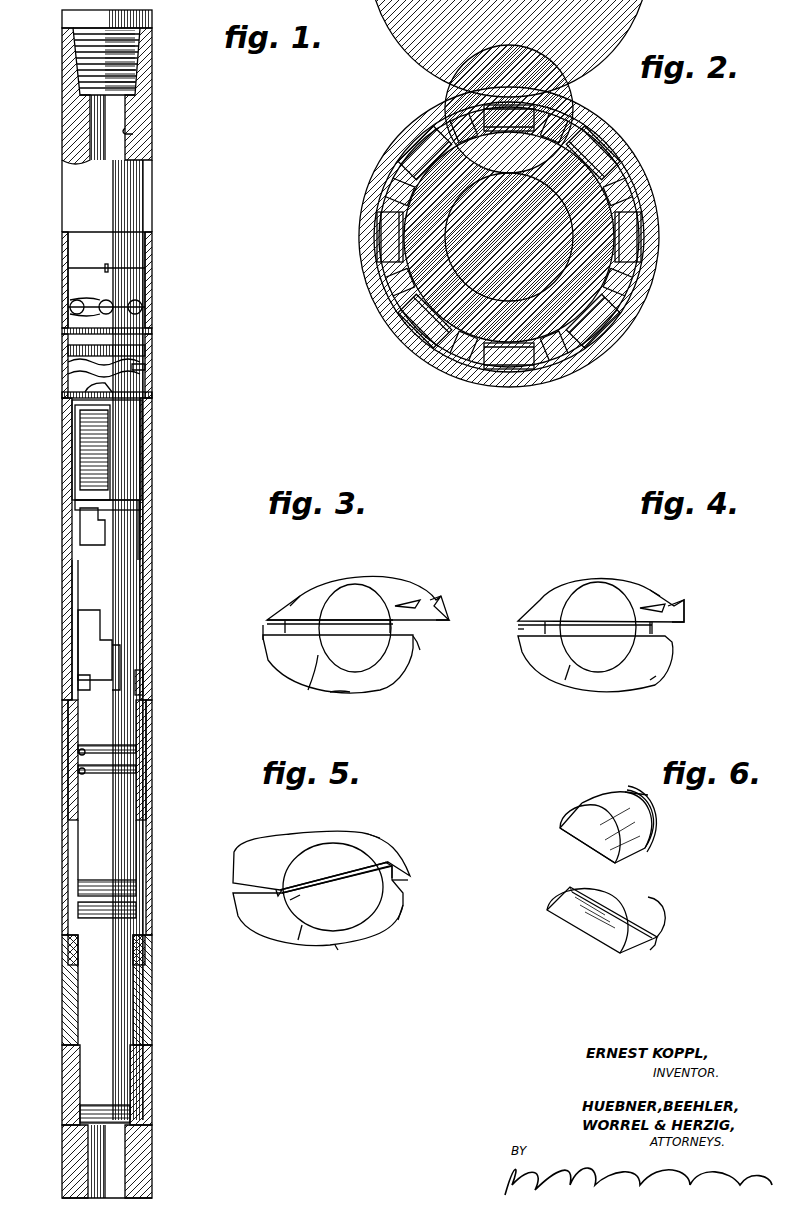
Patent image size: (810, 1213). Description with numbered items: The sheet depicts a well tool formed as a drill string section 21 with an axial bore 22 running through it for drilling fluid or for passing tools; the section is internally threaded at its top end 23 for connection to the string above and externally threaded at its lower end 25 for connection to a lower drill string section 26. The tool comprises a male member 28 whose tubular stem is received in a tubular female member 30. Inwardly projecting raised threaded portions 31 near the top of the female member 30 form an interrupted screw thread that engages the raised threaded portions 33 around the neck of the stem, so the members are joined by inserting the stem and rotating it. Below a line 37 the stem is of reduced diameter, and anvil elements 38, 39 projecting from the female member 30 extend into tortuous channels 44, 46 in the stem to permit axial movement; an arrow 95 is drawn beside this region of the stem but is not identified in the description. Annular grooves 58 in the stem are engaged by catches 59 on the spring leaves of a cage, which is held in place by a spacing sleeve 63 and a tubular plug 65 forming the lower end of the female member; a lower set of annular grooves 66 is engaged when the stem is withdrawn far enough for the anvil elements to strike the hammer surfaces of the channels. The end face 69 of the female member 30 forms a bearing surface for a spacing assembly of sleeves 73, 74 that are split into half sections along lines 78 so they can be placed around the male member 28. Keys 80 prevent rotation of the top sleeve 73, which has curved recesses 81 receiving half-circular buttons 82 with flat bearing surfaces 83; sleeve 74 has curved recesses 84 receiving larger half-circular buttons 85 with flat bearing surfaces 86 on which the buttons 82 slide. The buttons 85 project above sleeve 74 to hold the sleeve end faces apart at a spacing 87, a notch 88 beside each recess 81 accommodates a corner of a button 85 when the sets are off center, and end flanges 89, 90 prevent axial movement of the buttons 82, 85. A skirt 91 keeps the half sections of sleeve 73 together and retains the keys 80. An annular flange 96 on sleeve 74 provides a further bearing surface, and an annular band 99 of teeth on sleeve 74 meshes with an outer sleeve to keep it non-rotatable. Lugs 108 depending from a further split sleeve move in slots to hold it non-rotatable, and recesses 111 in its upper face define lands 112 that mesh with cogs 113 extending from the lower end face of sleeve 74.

In FIG. 1, the drill string section 21 is at (62, 136).
In FIG. 1, the axial bore 22 is at (133, 132).
In FIG. 2, the axial bore 22 is at (464, 270).
In FIG. 1, the top end 23 is at (143, 38).
In FIG. 1, the lower end 25 is at (152, 1121).
In FIG. 1, the drill string section 26 is at (152, 1168).
In FIG. 1, the male member 28 is at (150, 233).
In FIG. 2, the male member 28 is at (532, 302).
In FIG. 1, the tubular female member 30 is at (152, 482).
In FIG. 1, the raised threaded portions 31 is at (128, 463).
In FIG. 1, the raised threaded portions 33 is at (88, 470).
In FIG. 1, the line 37 is at (90, 691).
In FIG. 1, the anvil element 38 is at (150, 527).
In FIG. 1, the anvil element 39 is at (126, 442).
In FIG. 1, the tortuous channel 44 is at (122, 587).
In FIG. 1, the tortuous channel 46 is at (128, 658).
In FIG. 1, the annular grooves 58 is at (138, 770).
In FIG. 1, the catches 59 is at (78, 758).
In FIG. 1, the spacing sleeve 63 is at (78, 858).
In FIG. 1, the tubular plug 65 is at (146, 1063).
In FIG. 1, the annular grooves 66 is at (84, 908).
In FIG. 1, the end face 69 is at (74, 945).
In FIG. 3, the top sleeve 73 is at (300, 596).
In FIG. 4, the top sleeve 73 is at (656, 598).
In FIG. 5, the top sleeve 73 is at (372, 836).
In FIG. 2, the sleeve 74 is at (380, 292).
In FIG. 3, the sleeve 74 is at (342, 692).
In FIG. 4, the sleeve 74 is at (652, 672).
In FIG. 5, the sleeve 74 is at (340, 944).
In FIG. 2, the split lines 78 is at (400, 195).
In FIG. 1, the keys 80 is at (66, 268).
In FIG. 3, the curved recesses 81 is at (365, 590).
In FIG. 4, the curved recesses 81 is at (620, 592).
In FIG. 5, the curved recesses 81 is at (300, 852).
In FIG. 1, the half-circular buttons 82 is at (72, 302).
In FIG. 3, the half-circular buttons 82 is at (338, 598).
In FIG. 4, the half-circular buttons 82 is at (580, 594).
In FIG. 5, the half-circular buttons 82 is at (322, 850).
In FIG. 6, the half-circular buttons 82 is at (560, 826).
In FIG. 3, the flat bearing surface 83 is at (327, 624).
In FIG. 4, the flat bearing surface 83 is at (578, 625).
In FIG. 5, the flat bearing surface 83 is at (308, 886).
In FIG. 6, the flat bearing surface 83 is at (588, 848).
In FIG. 3, the curved recesses 84 is at (315, 660).
In FIG. 4, the curved recesses 84 is at (570, 666).
In FIG. 5, the curved recesses 84 is at (303, 926).
In FIG. 1, the half-circular buttons 85 is at (70, 314).
In FIG. 2, the half-circular buttons 85 is at (506, 104).
In FIG. 3, the half-circular buttons 85 is at (360, 660).
In FIG. 4, the half-circular buttons 85 is at (604, 668).
In FIG. 5, the half-circular buttons 85 is at (360, 915).
In FIG. 6, the half-circular buttons 85 is at (550, 938).
In FIG. 3, the flat bearing surfaces 86 is at (374, 620).
In FIG. 4, the flat bearing surfaces 86 is at (618, 623).
In FIG. 5, the flat bearing surfaces 86 is at (336, 875).
In FIG. 6, the flat bearing surfaces 86 is at (612, 918).
In FIG. 1, the spacing 87 is at (113, 300).
In FIG. 3, the spacing 87 is at (420, 638).
In FIG. 4, the spacing 87 is at (525, 630).
In FIG. 5, the spacing 87 is at (408, 884).
In FIG. 3, the notch 88 is at (440, 605).
In FIG. 4, the notch 88 is at (682, 606).
In FIG. 5, the notch 88 is at (393, 868).
In FIG. 3, the end flange 89 is at (410, 606).
In FIG. 4, the end flange 89 is at (645, 608).
In FIG. 5, the end flange 89 is at (278, 892).
In FIG. 6, the end flange 89 is at (618, 798).
In FIG. 3, the end flange 90 is at (270, 628).
In FIG. 4, the end flange 90 is at (660, 630).
In FIG. 5, the end flange 90 is at (402, 912).
In FIG. 6, the end flange 90 is at (655, 945).
In FIG. 2, the skirt 91 is at (364, 255).
In FIG. 1, the direction arrow 95 is at (78, 532).
In FIG. 1, the annular flange 96 is at (153, 331).
In FIG. 1, the annular band 99 is at (147, 351).
In FIG. 1, the lugs 108 is at (70, 395).
In FIG. 1, the recesses 111 is at (76, 362).
In FIG. 1, the lands 112 is at (146, 368).
In FIG. 1, the cogs 113 is at (76, 374).